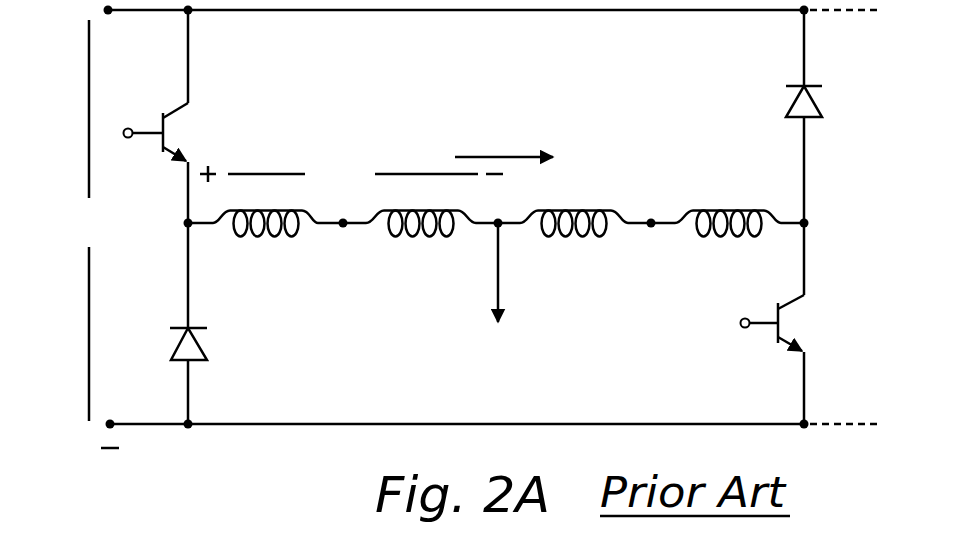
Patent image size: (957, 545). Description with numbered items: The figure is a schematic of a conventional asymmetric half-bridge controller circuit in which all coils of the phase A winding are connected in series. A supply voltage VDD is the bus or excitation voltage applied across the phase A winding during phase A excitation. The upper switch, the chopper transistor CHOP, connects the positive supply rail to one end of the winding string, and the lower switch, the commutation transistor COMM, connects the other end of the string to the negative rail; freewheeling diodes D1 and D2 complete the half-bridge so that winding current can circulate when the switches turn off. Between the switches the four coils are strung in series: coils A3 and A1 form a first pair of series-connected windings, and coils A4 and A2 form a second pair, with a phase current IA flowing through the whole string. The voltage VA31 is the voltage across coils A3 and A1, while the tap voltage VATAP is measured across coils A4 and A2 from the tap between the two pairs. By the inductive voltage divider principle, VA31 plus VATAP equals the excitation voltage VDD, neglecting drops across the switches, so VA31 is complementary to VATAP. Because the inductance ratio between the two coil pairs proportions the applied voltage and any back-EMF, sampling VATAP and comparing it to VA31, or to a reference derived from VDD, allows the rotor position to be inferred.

The supply voltage VDD is at (83, 234).
The chopper transistor CHOP is at (187, 169).
The commutation transistor COMM is at (803, 323).
The diode D1 is at (822, 116).
The diode D2 is at (172, 376).
The coil A1 is at (420, 243).
The coil A2 is at (727, 243).
The coil A3 is at (265, 243).
The coil A4 is at (574, 243).
The voltage across coils A3 and A1 VA31 is at (351, 162).
The phase A current IA is at (504, 134).
The tap voltage across coils A4 and A2 VATAP is at (488, 294).